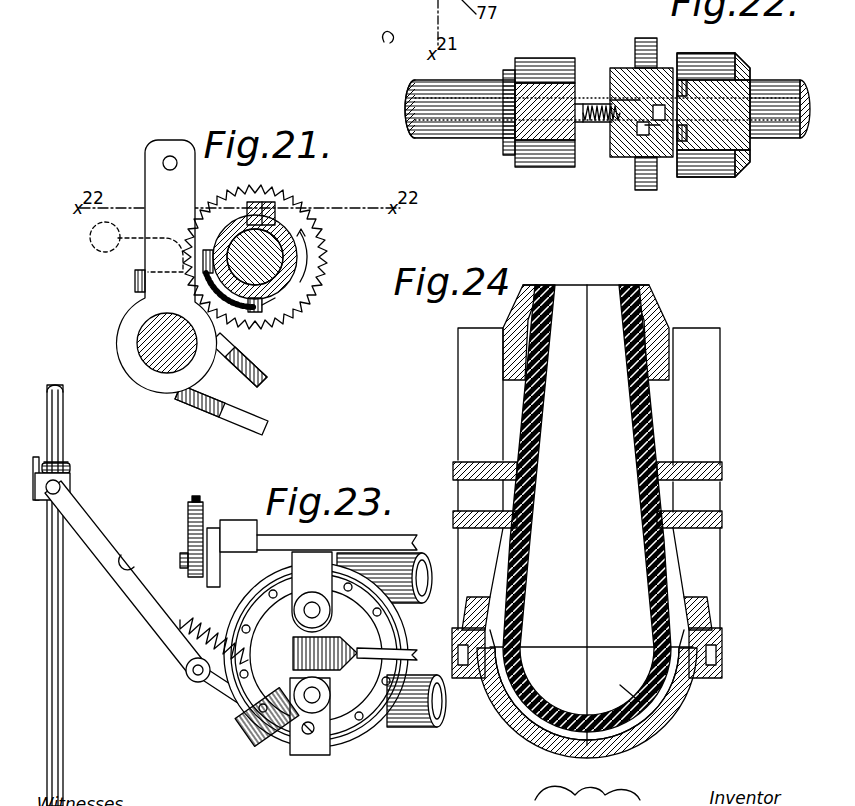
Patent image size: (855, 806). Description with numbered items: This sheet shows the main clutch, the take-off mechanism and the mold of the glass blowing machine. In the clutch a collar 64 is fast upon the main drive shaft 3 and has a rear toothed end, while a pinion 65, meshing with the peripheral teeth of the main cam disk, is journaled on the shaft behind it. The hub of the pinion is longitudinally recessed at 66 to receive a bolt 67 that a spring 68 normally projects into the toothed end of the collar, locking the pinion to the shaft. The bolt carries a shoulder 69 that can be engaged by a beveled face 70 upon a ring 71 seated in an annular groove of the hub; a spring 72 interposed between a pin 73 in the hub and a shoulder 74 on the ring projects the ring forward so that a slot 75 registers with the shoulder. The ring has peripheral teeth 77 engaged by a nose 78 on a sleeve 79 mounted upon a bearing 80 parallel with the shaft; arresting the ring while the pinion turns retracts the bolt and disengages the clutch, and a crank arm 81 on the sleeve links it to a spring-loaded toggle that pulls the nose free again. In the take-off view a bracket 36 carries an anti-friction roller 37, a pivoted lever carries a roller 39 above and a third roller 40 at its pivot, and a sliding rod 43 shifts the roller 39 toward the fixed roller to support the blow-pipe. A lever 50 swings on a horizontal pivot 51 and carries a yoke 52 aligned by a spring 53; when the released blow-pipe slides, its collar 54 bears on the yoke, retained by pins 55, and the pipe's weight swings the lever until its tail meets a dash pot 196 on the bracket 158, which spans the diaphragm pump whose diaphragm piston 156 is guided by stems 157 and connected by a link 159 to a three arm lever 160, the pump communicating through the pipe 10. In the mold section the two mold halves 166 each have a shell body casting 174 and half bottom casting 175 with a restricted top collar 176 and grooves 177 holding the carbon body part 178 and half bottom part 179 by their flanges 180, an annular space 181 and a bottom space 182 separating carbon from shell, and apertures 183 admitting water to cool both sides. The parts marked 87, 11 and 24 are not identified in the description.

In FIG. 22, the main drive shaft 3 is at (775, 130).
In FIG. 21, the main drive shaft 3 is at (287, 273).
In FIG. 22, the collar 64 is at (705, 76).
In FIG. 22, the pinion 65 is at (540, 135).
In FIG. 21, the pinion 65 is at (300, 243).
In FIG. 22, the longitudinal recess 66 is at (592, 106).
In FIG. 22, the bolt 67 is at (626, 117).
In FIG. 22, the spring 68 is at (600, 122).
In FIG. 21, the spring 68 is at (263, 200).
In FIG. 22, the shoulder 69 is at (682, 104).
In FIG. 22, the beveled face 70 is at (642, 112).
In FIG. 22, the ring 71 is at (640, 95).
In FIG. 21, the spring 72 is at (257, 313).
In FIG. 21, the pin 73 is at (203, 277).
In FIG. 21, the shoulder 74 is at (267, 307).
In FIG. 22, the slot 75 is at (652, 130).
In FIG. 21, the peripheral teeth 77 is at (276, 214).
In FIG. 21, the nose 78 is at (150, 240).
In FIG. 21, the sleeve 79 is at (137, 333).
In FIG. 21, the bearing 80 is at (168, 344).
In FIG. 21, the crank arm 81 is at (162, 155).
In FIG. 21, the fork arms 87 is at (233, 386).
In FIG. 23, the pipe 10 is at (387, 570).
In FIG. 23, the tube 11 is at (417, 707).
In FIG. 23, the rod 24 is at (55, 433).
In FIG. 23, the bracket 36 is at (215, 623).
In FIG. 23, the anti-friction roller 37 is at (200, 502).
In FIG. 23, the anti-friction roller 39 is at (203, 528).
In FIG. 23, the anti-friction roller 40 is at (192, 572).
In FIG. 23, the sliding rod 43 is at (297, 540).
In FIG. 23, the lever 50 is at (105, 550).
In FIG. 23, the horizontal pivot 51 is at (192, 678).
In FIG. 23, the yoke 52 is at (70, 477).
In FIG. 23, the spring 53 is at (262, 700).
In FIG. 23, the collar 54 is at (70, 468).
In FIG. 23, the pins 55 is at (45, 466).
In FIG. 23, the diaphragm piston 156 is at (340, 703).
In FIG. 23, the stems 157 is at (316, 610).
In FIG. 23, the bracket 158 is at (258, 650).
In FIG. 23, the link 159 is at (280, 712).
In FIG. 23, the three arm lever 160 is at (405, 652).
In FIG. 23, the dash pot 196 is at (277, 723).
In FIG. 24, the mold halves 166 is at (612, 305).
In FIG. 24, the body casting 174 is at (706, 476).
In FIG. 24, the half bottom casting 175 is at (520, 737).
In FIG. 24, the restricted top collar 176 is at (645, 315).
In FIG. 24, the grooves 177 is at (703, 627).
In FIG. 24, the body part 178 is at (607, 425).
In FIG. 24, the half bottom part 179 is at (653, 712).
In FIG. 24, the flanges 180 is at (718, 640).
In FIG. 24, the annular space 181 is at (652, 400).
In FIG. 24, the space 182 is at (567, 732).
In FIG. 24, the apertures 183 is at (512, 436).